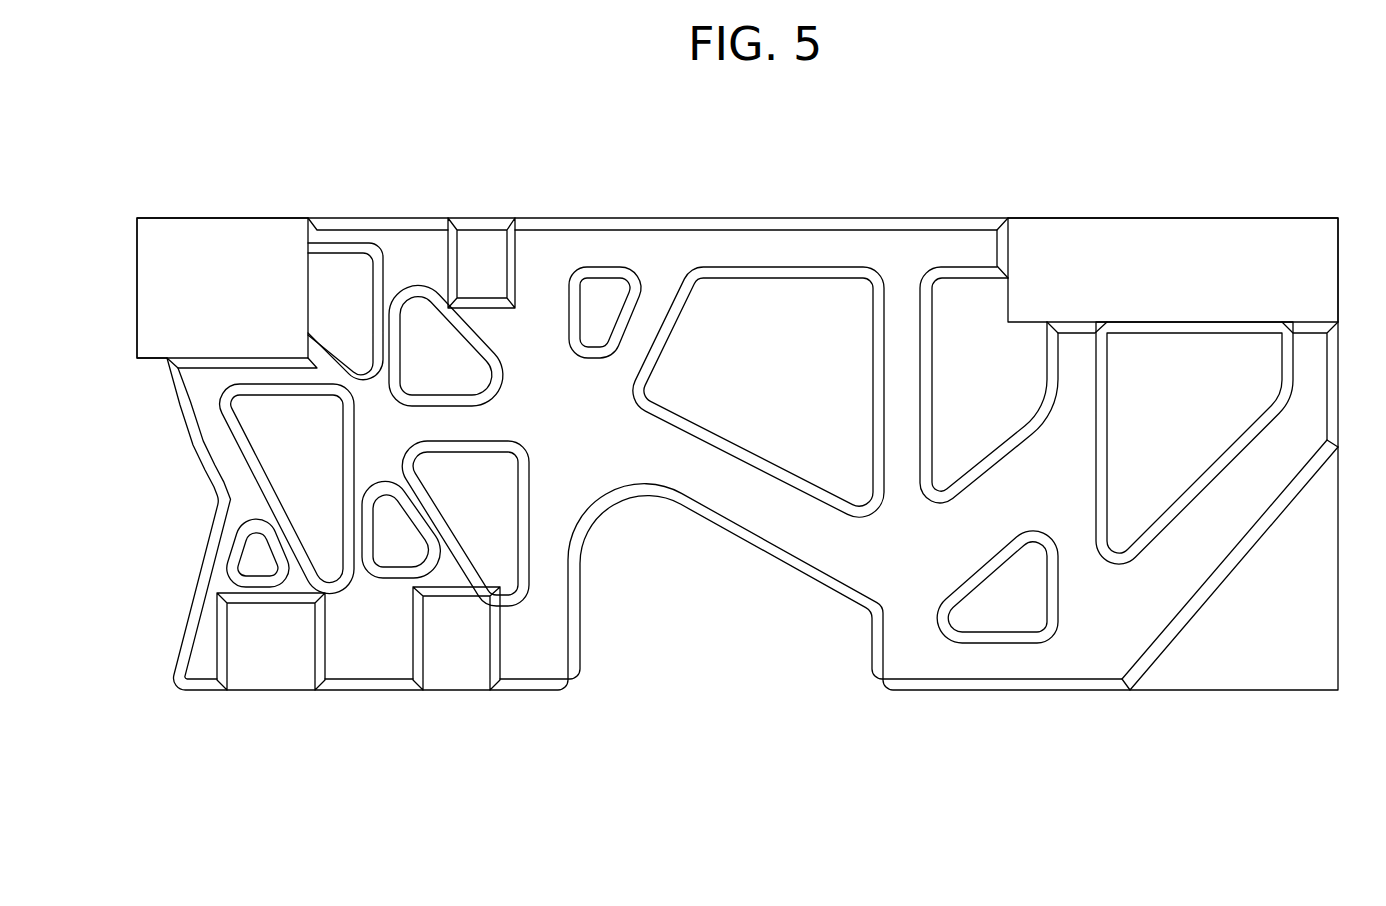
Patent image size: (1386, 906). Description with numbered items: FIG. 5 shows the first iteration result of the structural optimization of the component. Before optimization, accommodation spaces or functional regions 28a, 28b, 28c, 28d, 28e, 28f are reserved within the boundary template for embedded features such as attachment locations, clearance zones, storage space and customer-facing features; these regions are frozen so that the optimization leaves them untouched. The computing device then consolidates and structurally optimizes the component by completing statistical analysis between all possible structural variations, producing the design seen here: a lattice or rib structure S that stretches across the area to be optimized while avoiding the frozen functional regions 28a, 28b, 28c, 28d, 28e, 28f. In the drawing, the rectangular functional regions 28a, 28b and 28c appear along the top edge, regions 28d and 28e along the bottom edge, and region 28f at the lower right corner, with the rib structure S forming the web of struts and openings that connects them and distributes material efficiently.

The functional region 28a is at (212, 276).
The functional region 28b is at (483, 257).
The functional region 28c is at (1183, 258).
The functional region 28d is at (257, 662).
The functional region 28e is at (452, 660).
The functional region 28f is at (1257, 625).
The lattice or rib structure S is at (545, 662).